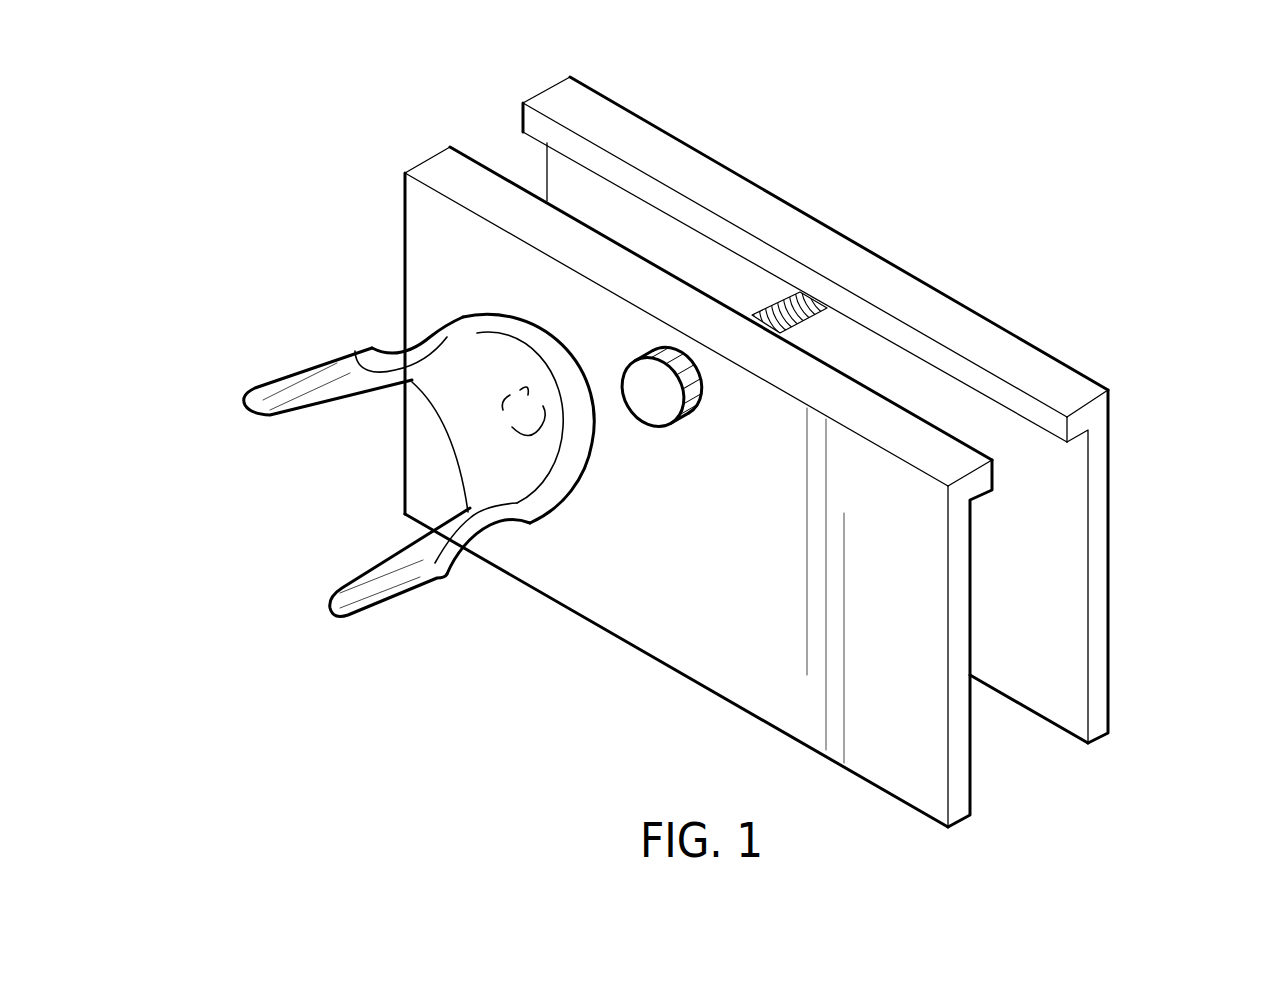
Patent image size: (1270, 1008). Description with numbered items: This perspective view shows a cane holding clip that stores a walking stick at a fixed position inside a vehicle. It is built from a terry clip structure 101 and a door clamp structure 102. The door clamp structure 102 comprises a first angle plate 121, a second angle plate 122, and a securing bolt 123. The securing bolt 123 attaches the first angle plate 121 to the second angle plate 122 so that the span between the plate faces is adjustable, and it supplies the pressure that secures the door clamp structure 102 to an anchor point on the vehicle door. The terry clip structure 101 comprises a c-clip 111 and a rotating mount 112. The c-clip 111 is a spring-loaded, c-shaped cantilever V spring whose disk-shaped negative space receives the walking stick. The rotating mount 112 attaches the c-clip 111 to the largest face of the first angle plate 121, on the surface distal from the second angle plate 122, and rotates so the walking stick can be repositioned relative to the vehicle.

The terry clip structure 101 is at (188, 148).
The door clamp structure 102 is at (820, 476).
The c-clip 111 is at (284, 372).
The rotating mount 112 is at (507, 395).
The first angle plate 121 is at (925, 795).
The second angle plate 122 is at (1108, 683).
The securing bolt 123 is at (781, 300).